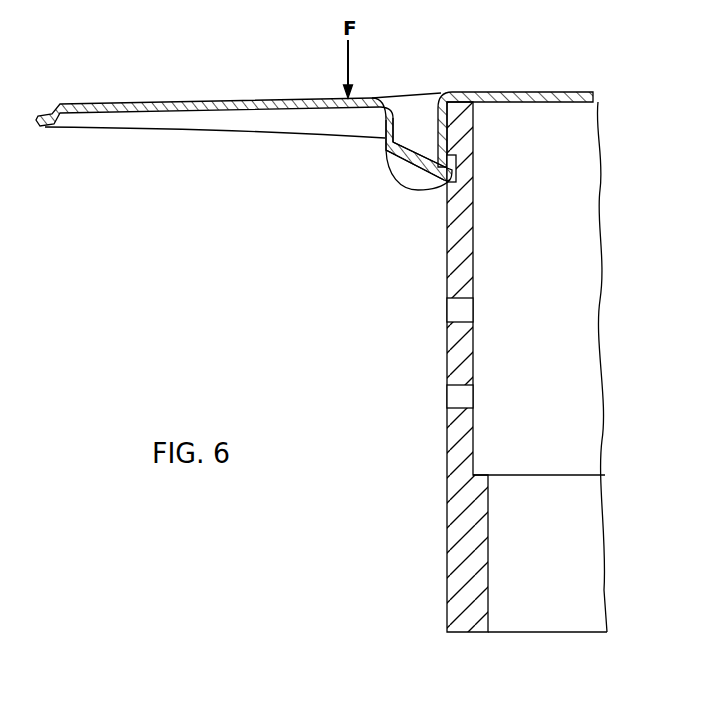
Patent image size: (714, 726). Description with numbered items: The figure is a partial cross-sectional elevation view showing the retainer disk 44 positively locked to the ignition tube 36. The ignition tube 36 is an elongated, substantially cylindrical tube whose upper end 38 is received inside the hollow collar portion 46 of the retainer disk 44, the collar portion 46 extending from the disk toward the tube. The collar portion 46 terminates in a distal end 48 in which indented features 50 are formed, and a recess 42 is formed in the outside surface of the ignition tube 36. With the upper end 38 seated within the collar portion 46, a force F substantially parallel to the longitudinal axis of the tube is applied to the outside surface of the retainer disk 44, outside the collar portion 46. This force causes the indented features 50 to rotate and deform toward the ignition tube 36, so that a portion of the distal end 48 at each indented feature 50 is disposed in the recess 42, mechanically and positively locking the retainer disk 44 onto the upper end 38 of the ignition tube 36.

The ignition tube 36 is at (457, 473).
The upper end 38 is at (462, 125).
The recess 42 is at (456, 160).
The retainer disk 44 is at (102, 104).
The collar portion 46 is at (385, 146).
The distal end 48 is at (447, 171).
The indented features 50 is at (415, 153).